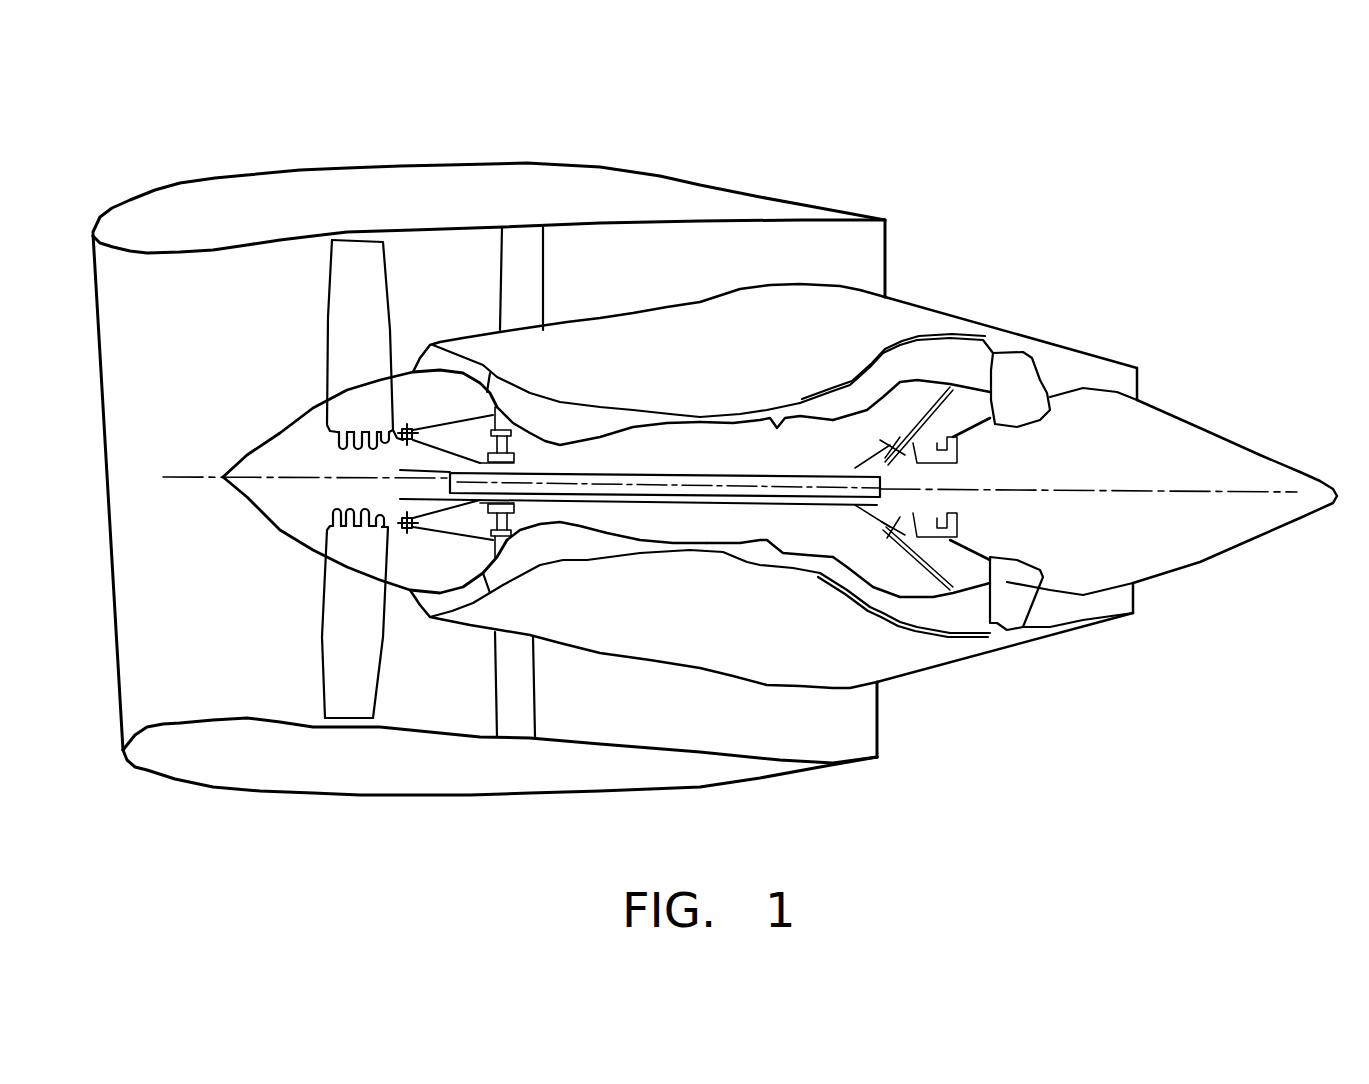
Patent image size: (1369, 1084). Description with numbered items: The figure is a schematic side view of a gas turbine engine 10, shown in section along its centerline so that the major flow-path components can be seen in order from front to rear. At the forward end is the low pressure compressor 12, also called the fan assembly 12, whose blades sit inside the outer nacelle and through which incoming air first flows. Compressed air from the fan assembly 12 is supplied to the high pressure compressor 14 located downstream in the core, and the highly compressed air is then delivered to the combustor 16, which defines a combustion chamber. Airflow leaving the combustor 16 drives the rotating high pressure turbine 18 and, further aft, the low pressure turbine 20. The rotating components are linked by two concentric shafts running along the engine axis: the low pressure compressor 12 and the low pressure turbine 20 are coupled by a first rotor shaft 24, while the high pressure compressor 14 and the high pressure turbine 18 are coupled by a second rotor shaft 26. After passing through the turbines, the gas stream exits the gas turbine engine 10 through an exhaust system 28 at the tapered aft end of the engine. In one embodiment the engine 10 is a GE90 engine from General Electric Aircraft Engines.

The gas turbine engine 10 is at (767, 93).
The low pressure compressor 12 is at (480, 365).
The high pressure compressor 14 is at (587, 417).
The combustor 16 is at (777, 417).
The high pressure turbine 18 is at (818, 590).
The low pressure turbine 20 is at (933, 363).
The first rotor shaft 24 is at (700, 530).
The second rotor shaft 26 is at (617, 497).
The exhaust system 28 is at (1183, 595).